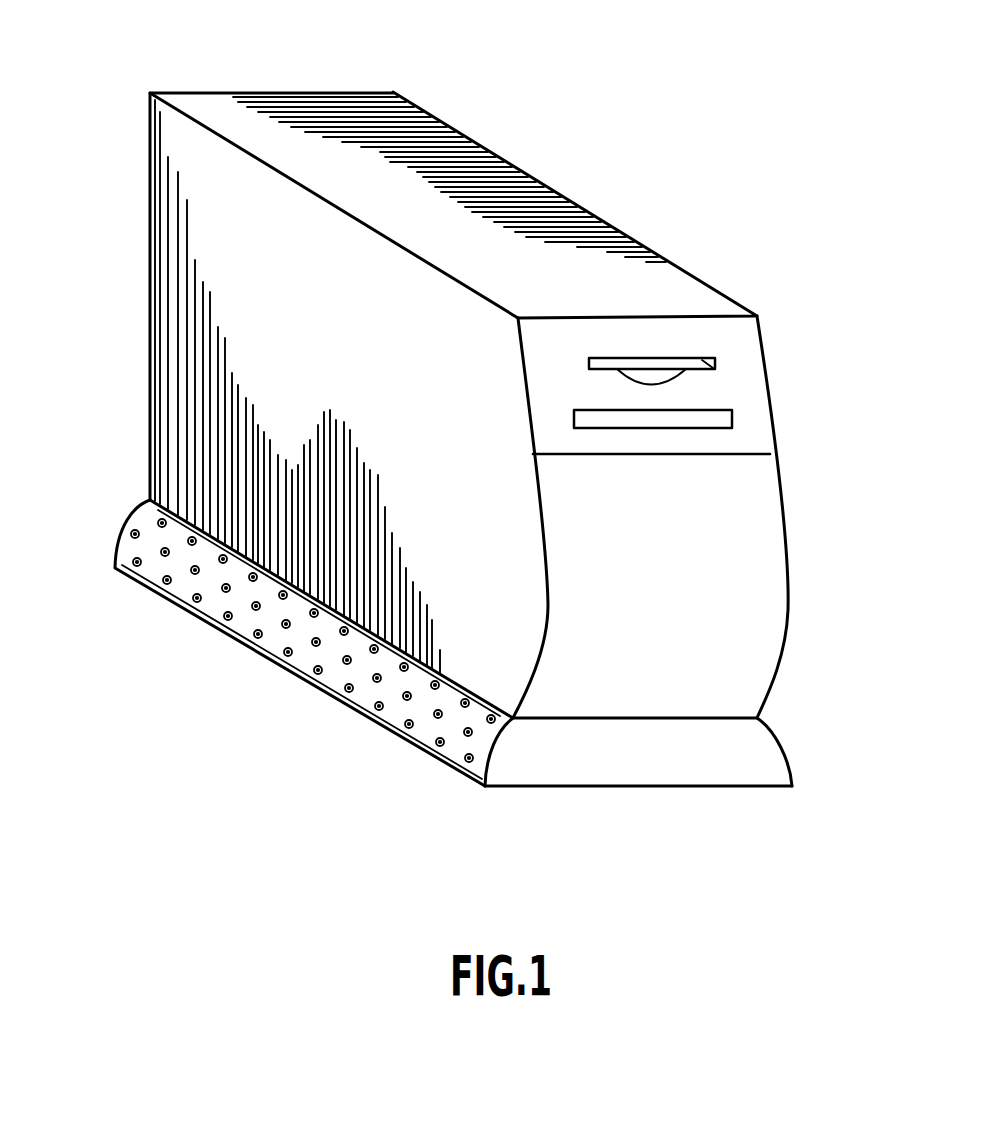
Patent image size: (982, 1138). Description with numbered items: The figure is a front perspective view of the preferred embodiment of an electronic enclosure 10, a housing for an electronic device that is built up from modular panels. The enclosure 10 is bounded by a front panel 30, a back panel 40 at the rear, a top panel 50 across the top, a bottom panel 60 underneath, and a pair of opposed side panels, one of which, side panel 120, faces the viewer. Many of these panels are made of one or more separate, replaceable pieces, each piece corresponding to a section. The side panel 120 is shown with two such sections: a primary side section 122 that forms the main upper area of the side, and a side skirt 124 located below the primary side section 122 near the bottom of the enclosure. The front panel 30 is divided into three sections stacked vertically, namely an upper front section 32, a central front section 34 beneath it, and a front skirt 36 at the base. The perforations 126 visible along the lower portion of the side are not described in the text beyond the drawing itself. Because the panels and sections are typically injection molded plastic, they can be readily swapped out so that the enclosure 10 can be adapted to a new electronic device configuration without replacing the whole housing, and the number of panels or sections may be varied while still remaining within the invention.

The electronic enclosure 10 is at (715, 148).
The back panel 40 is at (143, 89).
The top panel 50 is at (408, 130).
The side panel 120 is at (158, 281).
The primary side section 122 is at (173, 438).
The side skirt 124 is at (140, 523).
The apertures 126 is at (247, 640).
The bottom panel 60 is at (310, 694).
The front panel 30 is at (783, 621).
The upper front section 32 is at (755, 352).
The central front section 34 is at (757, 482).
The front skirt 36 is at (650, 765).